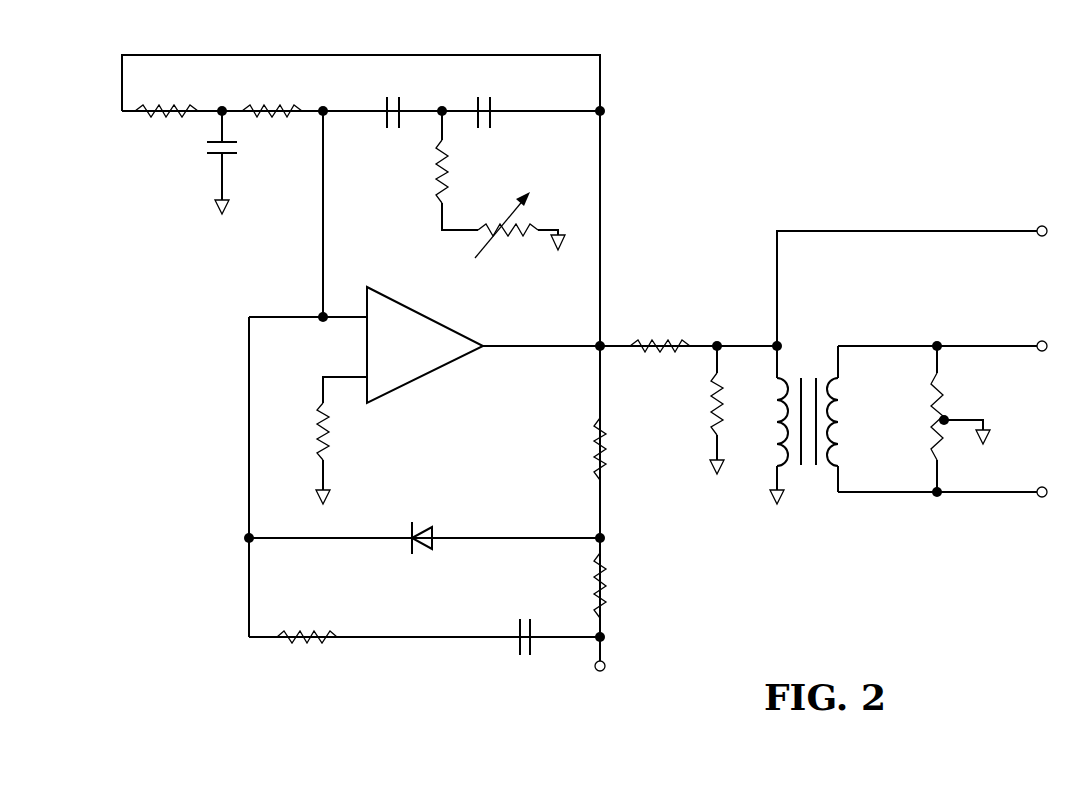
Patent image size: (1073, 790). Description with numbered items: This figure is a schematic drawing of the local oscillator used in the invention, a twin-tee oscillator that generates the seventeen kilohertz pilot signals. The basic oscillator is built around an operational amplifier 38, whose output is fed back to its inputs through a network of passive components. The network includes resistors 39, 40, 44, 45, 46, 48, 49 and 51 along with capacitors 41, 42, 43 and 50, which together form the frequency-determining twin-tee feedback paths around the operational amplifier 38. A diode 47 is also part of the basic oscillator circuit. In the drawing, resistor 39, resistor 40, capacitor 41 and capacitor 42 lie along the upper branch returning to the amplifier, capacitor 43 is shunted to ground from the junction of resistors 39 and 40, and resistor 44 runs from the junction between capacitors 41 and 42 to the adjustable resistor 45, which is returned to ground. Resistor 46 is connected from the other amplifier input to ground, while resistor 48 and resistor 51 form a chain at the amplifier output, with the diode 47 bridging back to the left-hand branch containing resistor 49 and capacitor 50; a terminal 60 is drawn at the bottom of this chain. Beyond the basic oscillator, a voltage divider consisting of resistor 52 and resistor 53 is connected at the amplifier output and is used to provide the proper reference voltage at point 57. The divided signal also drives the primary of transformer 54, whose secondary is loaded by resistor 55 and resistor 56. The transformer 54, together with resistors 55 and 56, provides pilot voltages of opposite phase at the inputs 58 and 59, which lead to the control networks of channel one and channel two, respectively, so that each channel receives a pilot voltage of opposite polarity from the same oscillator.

The operational amplifier 38 is at (386, 355).
The resistor 39 is at (165, 113).
The resistor 40 is at (270, 107).
The capacitor 41 is at (400, 103).
The capacitor 42 is at (492, 104).
The capacitor 43 is at (235, 153).
The resistor 44 is at (437, 172).
The resistor 45 is at (507, 236).
The resistor 46 is at (329, 432).
The diode 47 is at (421, 526).
The resistor 48 is at (594, 453).
The resistor 49 is at (308, 641).
The capacitor 50 is at (517, 623).
The resistor 51 is at (606, 590).
The resistor 52 is at (660, 343).
The resistor 53 is at (712, 403).
The transformer 54 is at (807, 366).
The resistor 55 is at (944, 388).
The resistor 56 is at (944, 442).
The point 57 is at (1042, 222).
The input 58 is at (1041, 339).
The input 59 is at (1041, 500).
The input terminal 60 is at (606, 668).